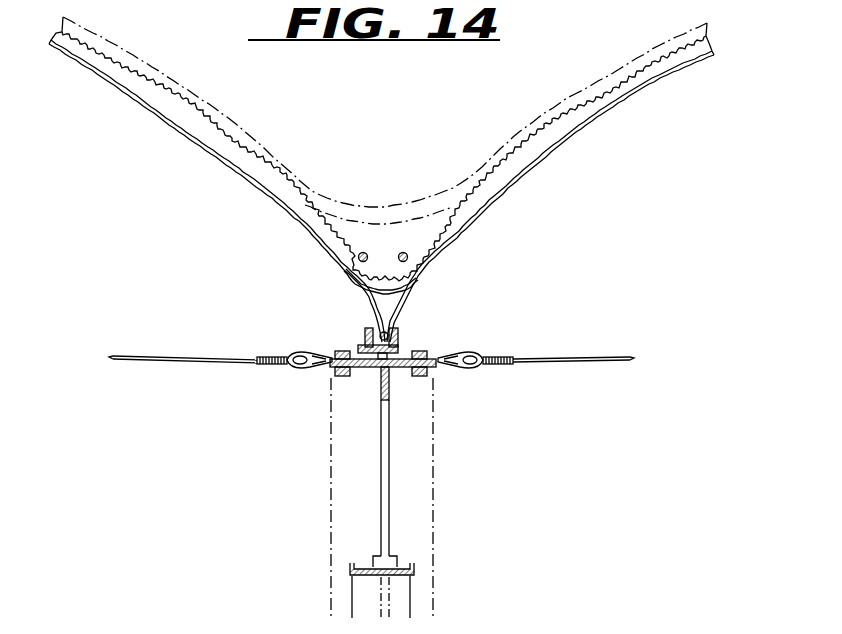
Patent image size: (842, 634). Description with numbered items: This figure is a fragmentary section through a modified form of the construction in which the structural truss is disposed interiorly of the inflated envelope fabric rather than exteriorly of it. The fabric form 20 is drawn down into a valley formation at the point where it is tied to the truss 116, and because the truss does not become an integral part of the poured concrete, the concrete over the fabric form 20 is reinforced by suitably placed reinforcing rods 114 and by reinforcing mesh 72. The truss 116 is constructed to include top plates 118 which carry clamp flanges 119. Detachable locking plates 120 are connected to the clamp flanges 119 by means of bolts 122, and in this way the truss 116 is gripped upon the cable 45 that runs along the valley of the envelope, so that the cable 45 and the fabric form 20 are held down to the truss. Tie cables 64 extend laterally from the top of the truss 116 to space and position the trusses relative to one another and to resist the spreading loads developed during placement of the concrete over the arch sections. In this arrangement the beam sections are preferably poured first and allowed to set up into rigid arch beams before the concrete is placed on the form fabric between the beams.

The fabric form 20 is at (185, 123).
The reinforcing mesh 72 is at (503, 163).
The reinforcing rods 114 is at (403, 253).
The cable 45 is at (386, 332).
The clamp flanges 119 is at (400, 336).
The detachable locking plates 120 is at (365, 338).
The bolts 122 is at (360, 348).
The top plates 118 is at (397, 370).
The truss 116 is at (377, 475).
The tie cables 64 is at (162, 358).